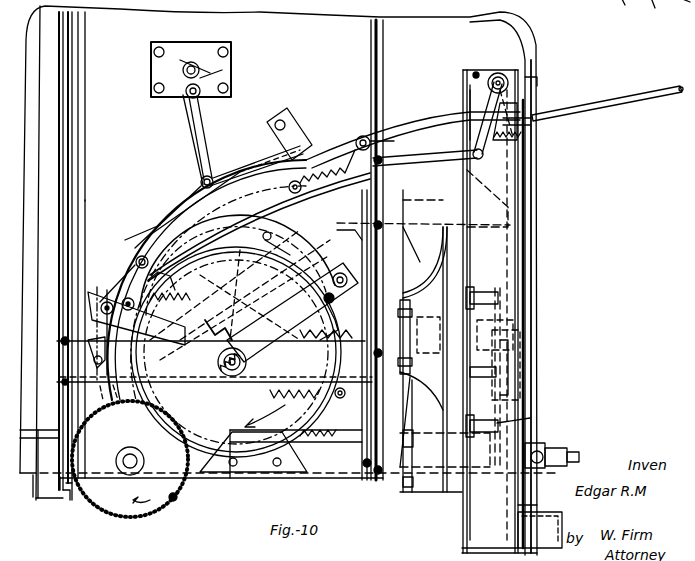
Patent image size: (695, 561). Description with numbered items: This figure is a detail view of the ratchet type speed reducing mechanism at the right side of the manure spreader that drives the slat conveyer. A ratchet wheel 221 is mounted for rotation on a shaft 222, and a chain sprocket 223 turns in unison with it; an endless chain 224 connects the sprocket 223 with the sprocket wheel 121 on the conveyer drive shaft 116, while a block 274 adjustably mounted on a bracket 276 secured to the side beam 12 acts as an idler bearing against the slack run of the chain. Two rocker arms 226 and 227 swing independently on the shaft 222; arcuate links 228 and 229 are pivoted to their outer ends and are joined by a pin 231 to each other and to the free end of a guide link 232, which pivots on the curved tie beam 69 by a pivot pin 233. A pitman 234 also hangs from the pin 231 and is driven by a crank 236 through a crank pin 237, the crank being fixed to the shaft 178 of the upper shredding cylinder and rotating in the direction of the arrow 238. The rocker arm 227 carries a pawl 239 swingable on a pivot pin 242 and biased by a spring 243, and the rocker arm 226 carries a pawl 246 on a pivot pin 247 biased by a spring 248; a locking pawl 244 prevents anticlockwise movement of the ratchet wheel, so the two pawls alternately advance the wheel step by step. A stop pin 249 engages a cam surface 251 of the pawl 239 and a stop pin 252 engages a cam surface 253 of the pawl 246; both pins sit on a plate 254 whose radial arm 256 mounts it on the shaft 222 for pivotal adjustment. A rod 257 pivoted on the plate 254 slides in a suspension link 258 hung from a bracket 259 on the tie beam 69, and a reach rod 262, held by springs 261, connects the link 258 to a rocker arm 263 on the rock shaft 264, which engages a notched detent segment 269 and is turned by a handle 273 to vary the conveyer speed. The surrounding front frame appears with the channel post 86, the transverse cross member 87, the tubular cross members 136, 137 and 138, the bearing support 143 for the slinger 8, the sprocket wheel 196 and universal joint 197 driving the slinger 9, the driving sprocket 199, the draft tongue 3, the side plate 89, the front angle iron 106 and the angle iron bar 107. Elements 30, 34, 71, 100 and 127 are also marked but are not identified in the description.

The shaft of the upper shredding cylinder 178 is at (193, 62).
The arrow 238 is at (181, 52).
The crank pin 237 is at (200, 95).
The crank 236 is at (231, 70).
The pitman 234 is at (193, 128).
The pivot pin 231 is at (201, 180).
The plate 254 is at (193, 187).
The guide link 232 is at (245, 168).
The suspension link 258 is at (265, 166).
The bracket 259 is at (290, 132).
The pivot pin 233 is at (362, 136).
The tie beam 69 is at (408, 112).
The angle iron bar 107 is at (78, 192).
The arcuate link 229 is at (160, 225).
The pawl 239 is at (135, 248).
The pivot pin 242 is at (135, 262).
The stop pin 249 is at (105, 300).
The spring 243 is at (165, 276).
The rod 257 is at (208, 266).
The stop pin 252 is at (264, 240).
The arcuate link 228 is at (298, 198).
The springs 261 is at (300, 190).
The front angle iron 106 is at (421, 215).
The side plate 89 is at (349, 239).
The cam surface 253 is at (237, 265).
The radial arm 256 is at (250, 295).
The rocker arm 227 is at (206, 330).
The shaft 222 is at (292, 320).
The rocker arm 226 is at (290, 304).
The pivot pin 247 is at (324, 306).
The spring 248 is at (330, 345).
The chain sprocket 223 is at (218, 375).
The block 274 is at (277, 408).
The ratchet wheel 221 is at (288, 432).
The bracket 276 is at (257, 472).
The side beam 12 is at (333, 475).
The pin 100 is at (366, 468).
The locking pawl 244 is at (343, 400).
The endless chain 224 is at (130, 445).
The conveyer drive shaft 116 is at (130, 470).
The sprocket wheel 121 is at (177, 497).
The cam surface 251 is at (102, 390).
The base 30 is at (40, 498).
The bracket 34 is at (70, 498).
The pawl 246 is at (420, 275).
The vertical slinger 8 is at (432, 262).
The bearing support 143 is at (410, 360).
The tubular cross member 136 is at (440, 420).
The vertical slinger 9 is at (417, 493).
The tubular cross member 138 is at (478, 290).
The driving sprocket 199 is at (500, 302).
The tubular cross member 137 is at (498, 363).
The sprocket wheel 196 is at (532, 418).
The universal joint 197 is at (545, 448).
The draft tongue 3 is at (538, 505).
The transverse cross member 87 is at (540, 530).
The rock shaft 264 is at (497, 73).
The rocker arm 263 is at (485, 107).
The vertical post 86 is at (463, 80).
The reach rod 262 is at (422, 158).
The notched detent segment 269 is at (530, 138).
The handle 273 is at (625, 102).
The member 71 is at (611, 6).
The member 127 is at (666, 15).